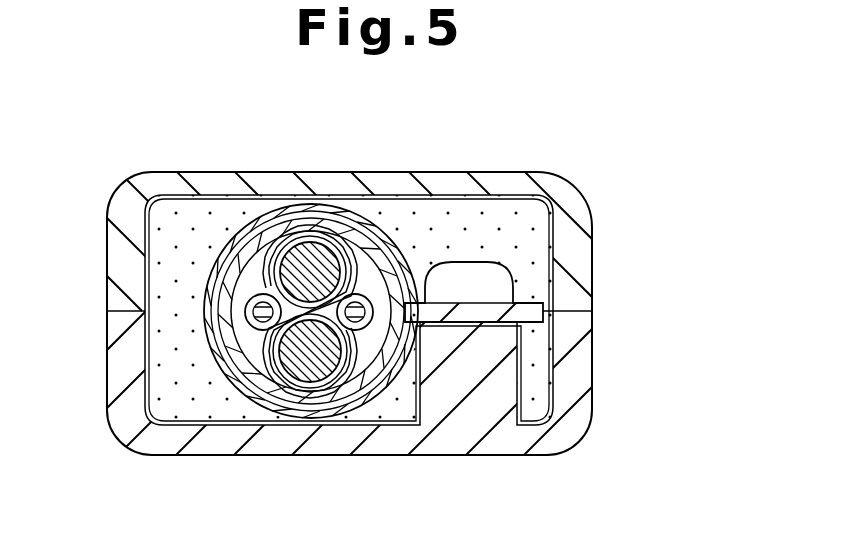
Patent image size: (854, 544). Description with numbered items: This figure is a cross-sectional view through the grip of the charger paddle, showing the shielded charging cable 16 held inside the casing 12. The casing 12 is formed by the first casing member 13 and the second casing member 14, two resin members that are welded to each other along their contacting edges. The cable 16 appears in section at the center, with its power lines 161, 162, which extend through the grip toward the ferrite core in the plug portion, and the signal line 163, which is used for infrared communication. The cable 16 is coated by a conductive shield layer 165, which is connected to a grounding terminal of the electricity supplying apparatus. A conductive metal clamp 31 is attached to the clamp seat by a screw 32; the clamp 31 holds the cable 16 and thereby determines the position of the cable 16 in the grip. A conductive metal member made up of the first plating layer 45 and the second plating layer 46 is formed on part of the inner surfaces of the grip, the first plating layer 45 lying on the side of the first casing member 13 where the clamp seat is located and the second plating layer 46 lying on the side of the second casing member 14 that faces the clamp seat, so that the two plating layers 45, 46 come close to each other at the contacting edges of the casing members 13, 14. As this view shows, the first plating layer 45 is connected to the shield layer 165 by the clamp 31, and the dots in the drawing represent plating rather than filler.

The casing 12 is at (668, 258).
The first casing member 13 is at (585, 327).
The second casing member 14 is at (585, 265).
The shielded charging cable 16 is at (350, 222).
The clamp 31 is at (210, 243).
The screw 32 is at (497, 277).
The first plating layer 45 is at (158, 348).
The second plating layer 46 is at (155, 245).
The power line 161 is at (310, 372).
The power line 162 is at (310, 260).
The signal line 163 is at (262, 305).
The shield layer 165 is at (277, 357).